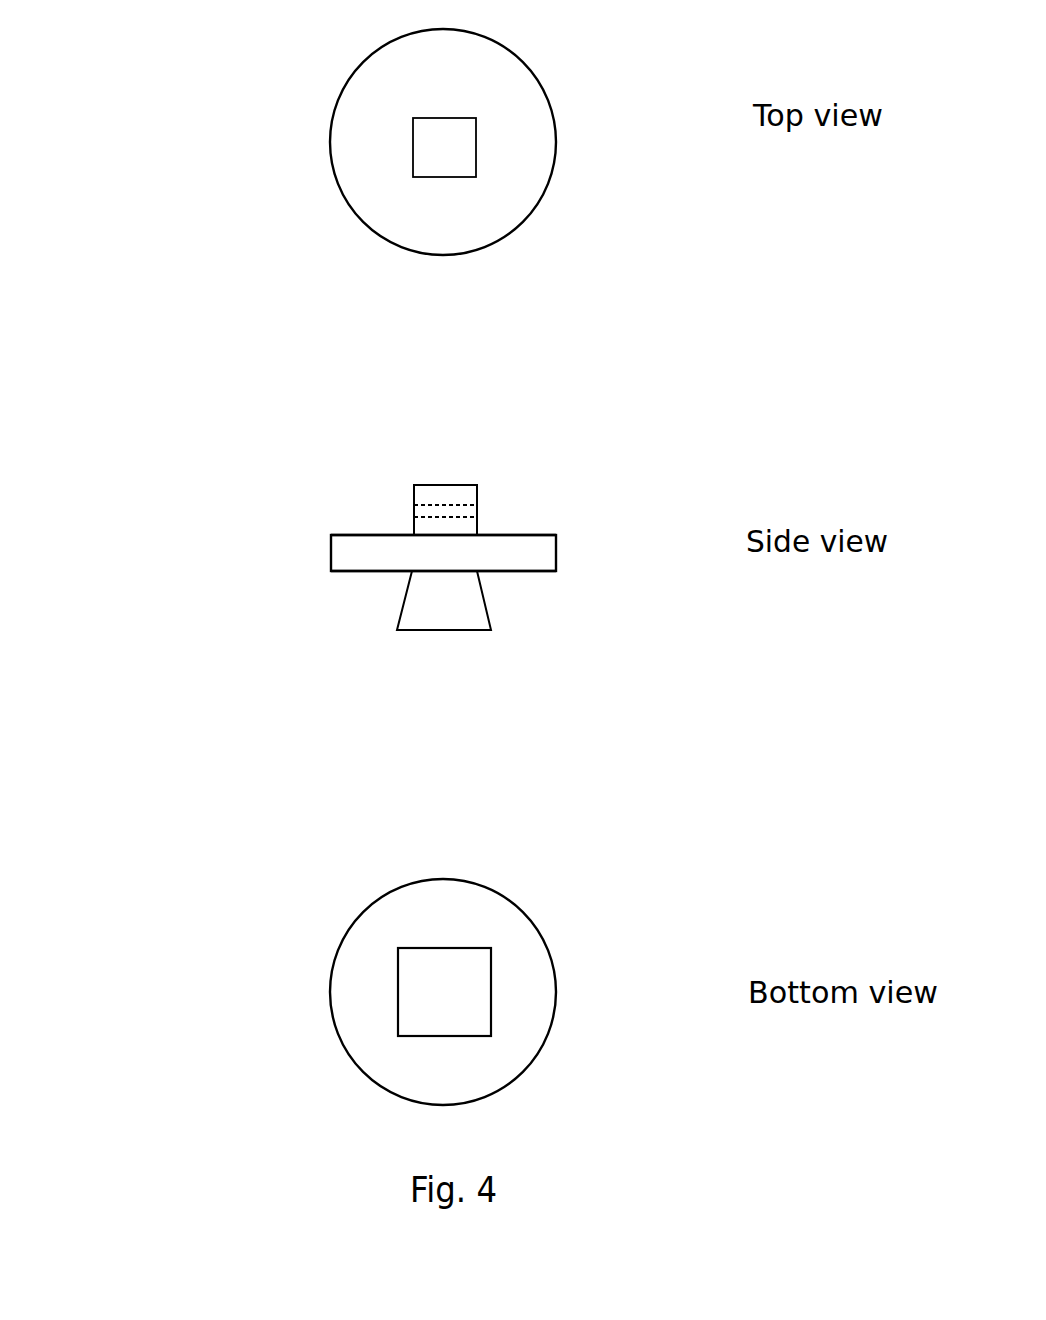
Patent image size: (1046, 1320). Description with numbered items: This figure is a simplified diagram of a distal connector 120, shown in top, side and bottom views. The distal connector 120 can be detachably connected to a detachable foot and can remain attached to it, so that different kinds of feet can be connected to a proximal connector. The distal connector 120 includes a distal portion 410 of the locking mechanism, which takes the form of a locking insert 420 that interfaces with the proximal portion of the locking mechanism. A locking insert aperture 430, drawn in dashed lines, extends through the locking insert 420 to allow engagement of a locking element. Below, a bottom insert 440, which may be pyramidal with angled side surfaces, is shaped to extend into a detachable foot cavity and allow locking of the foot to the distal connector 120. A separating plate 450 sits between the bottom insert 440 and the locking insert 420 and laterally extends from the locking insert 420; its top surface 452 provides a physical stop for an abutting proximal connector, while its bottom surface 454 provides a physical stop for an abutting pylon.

The distal connector 120 is at (320, 148).
The distal portion of the locking mechanism 410 is at (413, 492).
The locking insert 420 is at (477, 495).
The locking insert aperture 430 is at (477, 510).
The bottom insert 440 is at (483, 600).
The separating plate 450 is at (556, 553).
The top surface 452 is at (346, 522).
The bottom surface 454 is at (363, 583).